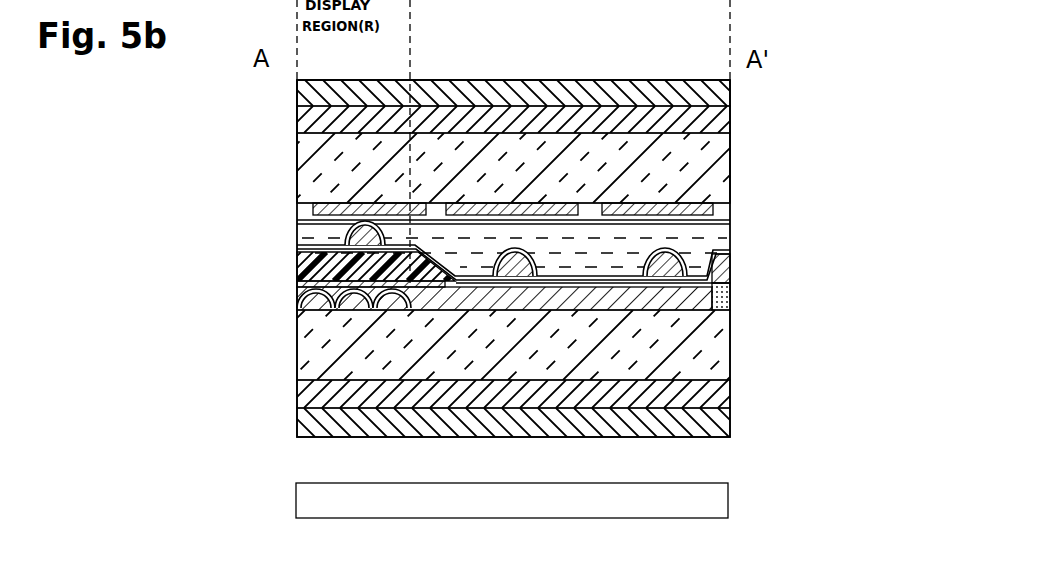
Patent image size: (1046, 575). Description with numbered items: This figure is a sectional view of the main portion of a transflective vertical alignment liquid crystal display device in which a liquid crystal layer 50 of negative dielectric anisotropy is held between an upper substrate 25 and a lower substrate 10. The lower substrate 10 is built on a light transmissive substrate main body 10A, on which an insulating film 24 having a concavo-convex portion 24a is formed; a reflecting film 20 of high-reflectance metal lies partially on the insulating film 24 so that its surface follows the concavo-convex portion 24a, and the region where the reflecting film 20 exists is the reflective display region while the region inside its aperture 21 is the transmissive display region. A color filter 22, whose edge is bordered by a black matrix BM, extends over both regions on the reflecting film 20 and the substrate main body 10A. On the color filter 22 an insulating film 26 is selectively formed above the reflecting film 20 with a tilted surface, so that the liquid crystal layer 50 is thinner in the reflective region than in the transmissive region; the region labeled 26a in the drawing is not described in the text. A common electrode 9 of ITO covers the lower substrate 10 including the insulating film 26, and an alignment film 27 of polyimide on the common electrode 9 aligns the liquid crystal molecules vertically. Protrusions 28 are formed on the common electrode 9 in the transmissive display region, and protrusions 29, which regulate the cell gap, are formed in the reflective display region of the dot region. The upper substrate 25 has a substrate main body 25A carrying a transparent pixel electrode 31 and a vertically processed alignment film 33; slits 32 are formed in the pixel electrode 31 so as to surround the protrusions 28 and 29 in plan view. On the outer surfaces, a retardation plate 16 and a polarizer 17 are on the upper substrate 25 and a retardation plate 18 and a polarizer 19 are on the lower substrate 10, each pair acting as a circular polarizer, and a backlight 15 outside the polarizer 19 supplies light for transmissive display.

The polarizer 17 is at (735, 92).
The retardation plate 16 is at (735, 118).
The substrate main body 25A is at (735, 155).
The alignment film 33 is at (735, 185).
The pixel electrode 31 is at (735, 210).
The slits 32 is at (430, 205).
The liquid crystal layer 50 is at (735, 228).
The alignment film 27 is at (735, 250).
The common electrode 9 is at (297, 249).
The protrusions 29 is at (345, 236).
The protrusions 28 is at (515, 287).
The insulating film 26 is at (297, 273).
The overcoat layer 26a is at (735, 268).
The black matrix BM is at (297, 285).
The insulating film 24 is at (350, 306).
The concavo-convex portion 24a is at (330, 312).
The reflecting film 20 is at (300, 295).
The aperture 21 is at (420, 308).
The color filter 22 is at (735, 345).
The substrate main body 10A is at (735, 390).
The retardation plate 18 is at (735, 418).
The polarizer 19 is at (735, 432).
The backlight 15 is at (713, 498).
The upper substrate 25 is at (213, 80).
The lower substrate 10 is at (213, 238).